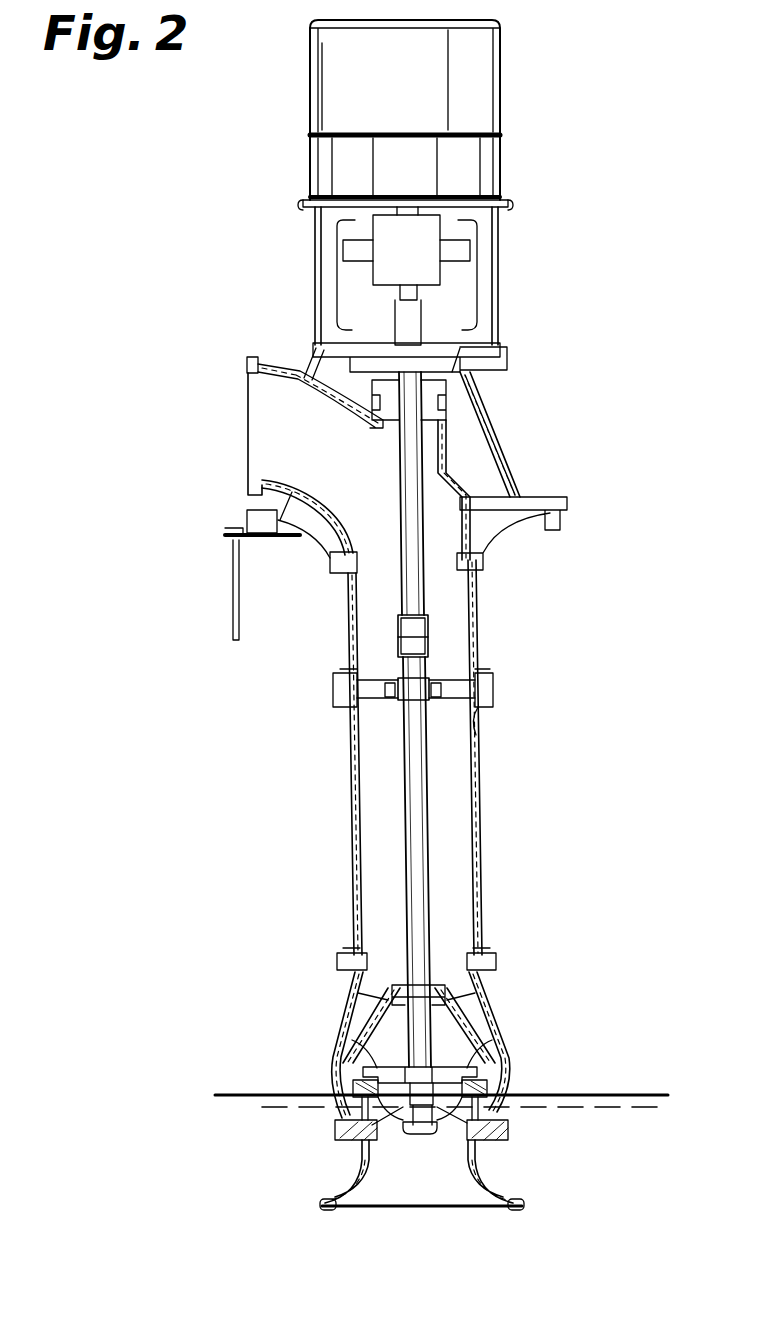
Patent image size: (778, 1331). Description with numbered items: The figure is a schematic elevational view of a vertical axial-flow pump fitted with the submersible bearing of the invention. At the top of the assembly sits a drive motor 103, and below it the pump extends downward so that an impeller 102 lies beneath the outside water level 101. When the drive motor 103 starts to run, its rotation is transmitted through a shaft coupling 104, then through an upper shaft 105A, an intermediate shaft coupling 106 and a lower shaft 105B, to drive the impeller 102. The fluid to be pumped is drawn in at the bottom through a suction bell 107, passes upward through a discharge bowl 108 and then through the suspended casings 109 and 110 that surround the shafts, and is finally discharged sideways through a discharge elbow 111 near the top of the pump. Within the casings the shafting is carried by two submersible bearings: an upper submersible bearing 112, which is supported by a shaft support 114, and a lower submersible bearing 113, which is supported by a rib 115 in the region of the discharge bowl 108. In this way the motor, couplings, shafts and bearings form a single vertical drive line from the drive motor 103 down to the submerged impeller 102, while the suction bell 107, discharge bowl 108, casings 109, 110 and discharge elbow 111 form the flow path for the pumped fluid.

The outside water level 101 is at (623, 1094).
The impeller 102 is at (480, 1100).
The drive motor 103 is at (489, 163).
The shaft coupling 104 is at (466, 246).
The shaft 105A is at (426, 581).
The shaft 105B is at (427, 841).
The intermediate shaft coupling 106 is at (430, 629).
The suction bell 107 is at (358, 1188).
The discharge bowl 108 is at (504, 1036).
The suspended casing 109 is at (478, 903).
The suspended casing 110 is at (475, 651).
The discharge elbow 111 is at (265, 430).
The upper submersible bearing 112 is at (474, 665).
The lower submersible bearing 113 is at (455, 1018).
The shaft support 114 is at (454, 706).
The rib 115 is at (355, 1038).